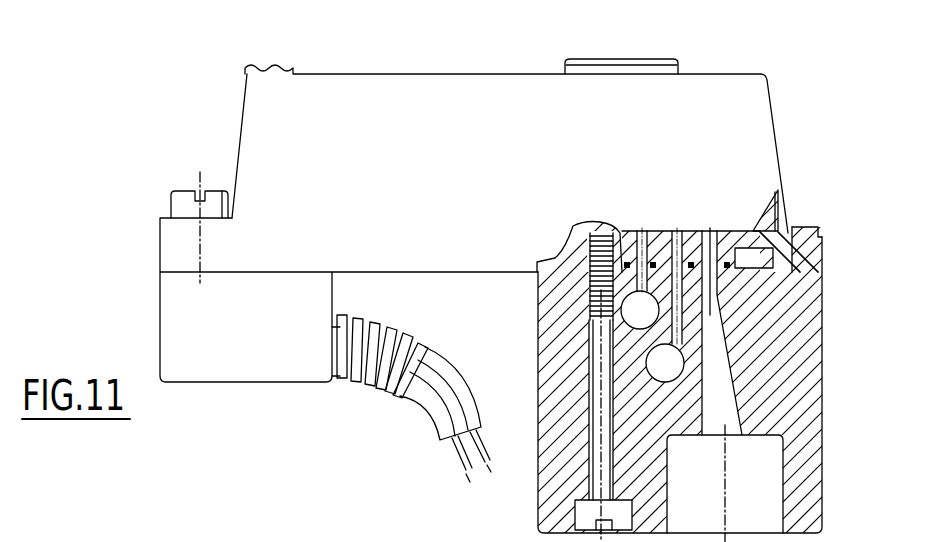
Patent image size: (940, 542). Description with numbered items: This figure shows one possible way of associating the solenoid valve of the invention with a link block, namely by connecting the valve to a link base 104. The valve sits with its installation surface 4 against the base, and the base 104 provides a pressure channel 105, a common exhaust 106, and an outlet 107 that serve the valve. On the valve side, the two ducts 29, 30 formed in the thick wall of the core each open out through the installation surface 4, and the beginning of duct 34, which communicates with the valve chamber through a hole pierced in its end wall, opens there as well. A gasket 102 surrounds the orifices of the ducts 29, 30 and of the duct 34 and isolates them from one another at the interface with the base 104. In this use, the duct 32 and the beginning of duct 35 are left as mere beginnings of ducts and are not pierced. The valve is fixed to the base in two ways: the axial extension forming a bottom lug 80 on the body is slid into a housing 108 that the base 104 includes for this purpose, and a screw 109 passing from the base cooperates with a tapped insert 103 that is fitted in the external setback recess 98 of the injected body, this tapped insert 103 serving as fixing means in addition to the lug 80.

The installation surface 4 is at (778, 285).
The duct 29 is at (641, 233).
The duct 30 is at (710, 240).
The duct 32 is at (155, 357).
The beginning of duct 34 is at (717, 232).
The beginning of duct 35 is at (459, 300).
The axial extension 80 is at (820, 254).
The recess 98 is at (541, 300).
The gasket 102 is at (672, 232).
The tapped insert 103 is at (617, 228).
The link base 104 is at (793, 393).
The pressure channel 105 is at (630, 322).
The common exhaust 106 is at (655, 375).
The outlet 107 is at (717, 415).
The housing 108 is at (806, 252).
The screw 109 is at (593, 368).